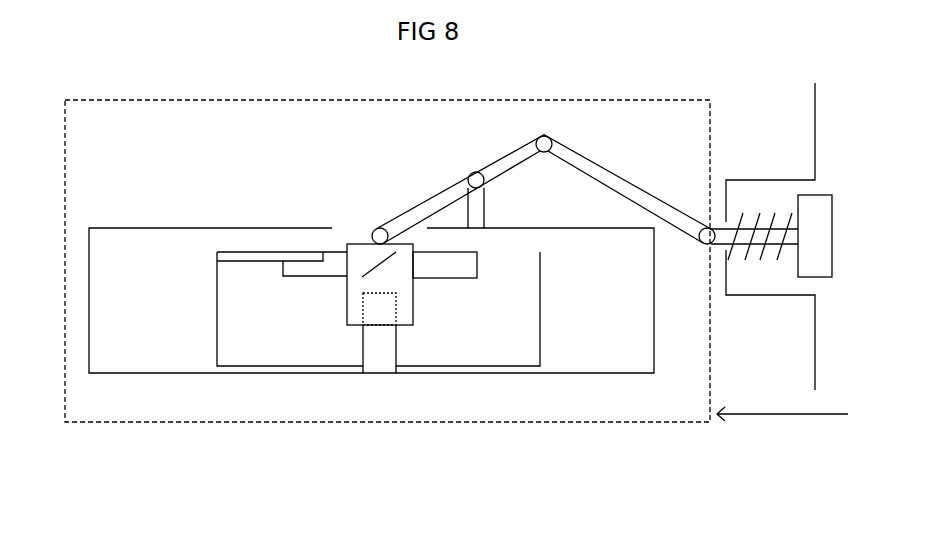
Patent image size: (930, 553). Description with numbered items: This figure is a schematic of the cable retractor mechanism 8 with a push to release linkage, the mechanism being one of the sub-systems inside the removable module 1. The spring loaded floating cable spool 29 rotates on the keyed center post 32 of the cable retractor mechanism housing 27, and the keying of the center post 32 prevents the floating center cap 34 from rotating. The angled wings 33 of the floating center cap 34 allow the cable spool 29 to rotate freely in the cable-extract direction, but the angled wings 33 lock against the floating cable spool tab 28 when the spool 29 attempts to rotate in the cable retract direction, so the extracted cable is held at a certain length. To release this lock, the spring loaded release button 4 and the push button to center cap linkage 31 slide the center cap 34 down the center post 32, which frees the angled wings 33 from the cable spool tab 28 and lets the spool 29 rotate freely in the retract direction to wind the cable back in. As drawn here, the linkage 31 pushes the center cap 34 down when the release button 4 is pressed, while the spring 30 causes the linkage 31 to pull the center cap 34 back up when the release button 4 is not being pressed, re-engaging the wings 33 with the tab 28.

The removable module 1 is at (783, 170).
The release button 4 is at (832, 187).
The cable retractor mechanism 8 is at (782, 421).
The cable retractor mechanism housing 27 is at (638, 382).
The floating cable spool tab 28 is at (259, 244).
The floating cable spool 29 is at (549, 348).
The spring 30 is at (742, 203).
The push button to center cap linkage 31 is at (638, 180).
The keyed center post 32 is at (356, 348).
The angled wings 33 is at (290, 285).
The floating center cap 34 is at (340, 308).